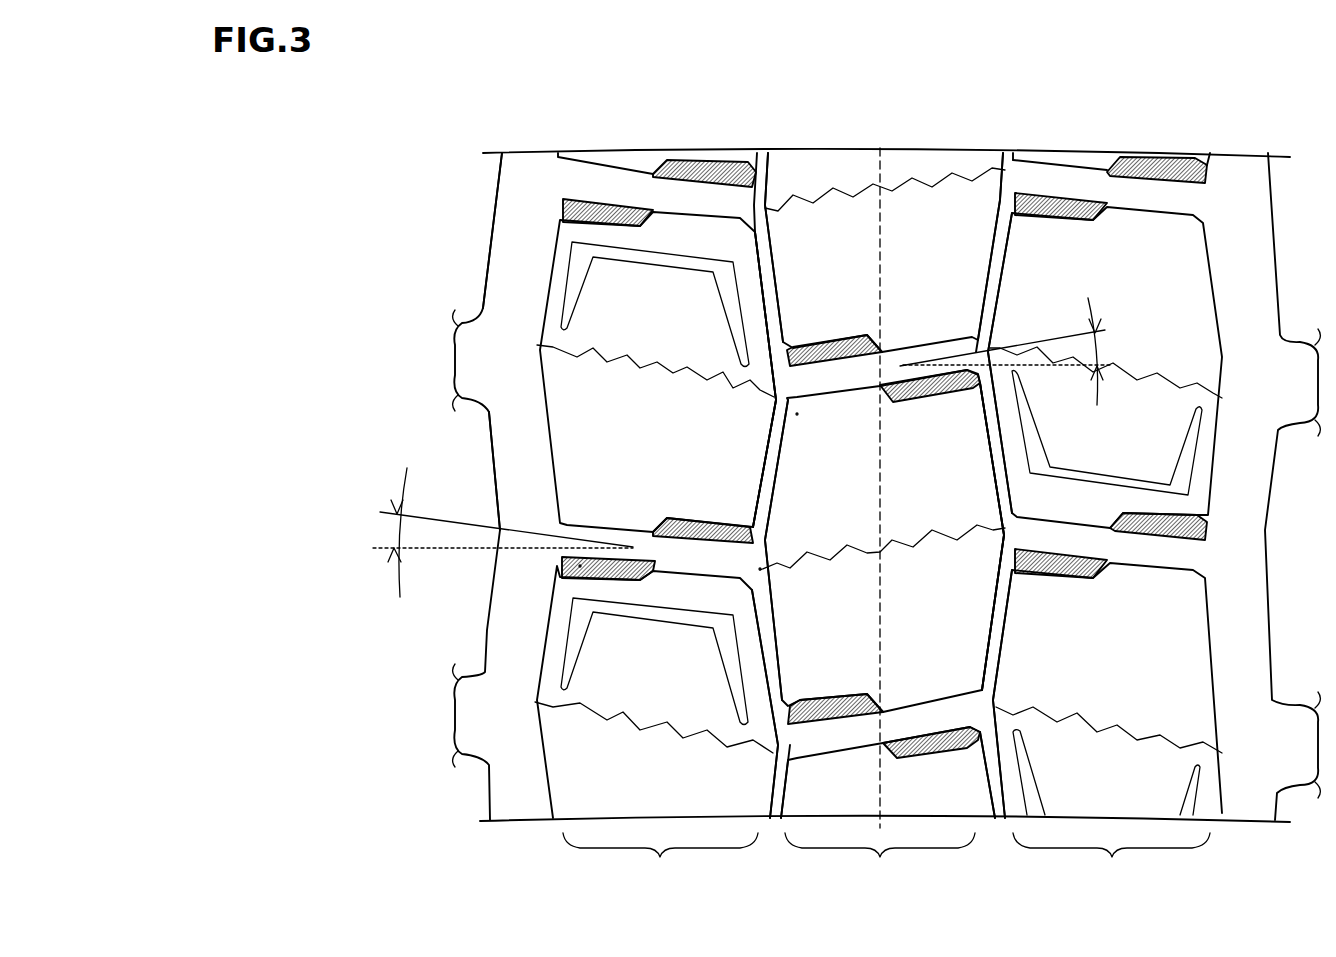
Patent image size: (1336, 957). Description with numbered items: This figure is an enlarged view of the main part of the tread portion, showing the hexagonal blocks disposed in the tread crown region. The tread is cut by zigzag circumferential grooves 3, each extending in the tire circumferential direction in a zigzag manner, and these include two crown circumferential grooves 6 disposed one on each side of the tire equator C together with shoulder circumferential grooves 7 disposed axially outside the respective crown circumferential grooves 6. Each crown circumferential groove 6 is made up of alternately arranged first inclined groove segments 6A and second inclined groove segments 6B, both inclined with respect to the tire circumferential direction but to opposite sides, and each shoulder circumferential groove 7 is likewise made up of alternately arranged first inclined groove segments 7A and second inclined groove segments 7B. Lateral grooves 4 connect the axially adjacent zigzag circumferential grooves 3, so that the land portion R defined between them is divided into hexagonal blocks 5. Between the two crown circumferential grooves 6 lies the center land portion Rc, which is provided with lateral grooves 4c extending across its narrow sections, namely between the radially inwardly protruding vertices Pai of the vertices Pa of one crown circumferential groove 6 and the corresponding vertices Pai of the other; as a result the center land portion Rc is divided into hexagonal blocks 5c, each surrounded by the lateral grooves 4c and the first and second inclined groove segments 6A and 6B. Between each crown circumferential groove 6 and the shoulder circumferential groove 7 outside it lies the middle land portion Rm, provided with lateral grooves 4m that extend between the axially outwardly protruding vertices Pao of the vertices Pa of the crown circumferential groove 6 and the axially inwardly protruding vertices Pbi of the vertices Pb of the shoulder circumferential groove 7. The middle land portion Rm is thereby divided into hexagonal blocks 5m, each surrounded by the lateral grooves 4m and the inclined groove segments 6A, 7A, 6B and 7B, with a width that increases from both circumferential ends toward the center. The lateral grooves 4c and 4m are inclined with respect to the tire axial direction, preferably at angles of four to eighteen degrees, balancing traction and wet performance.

The zigzag circumferential groove 3 is at (824, 445).
The crown circumferential groove 6 is at (762, 162).
The shoulder circumferential groove 7 is at (534, 163).
The first inclined groove segment 6A is at (1000, 490).
The second inclined groove segment 6B is at (765, 460).
The first inclined groove segment 7A is at (513, 455).
The second inclined groove segment 7B is at (517, 253).
The lateral groove 4 is at (884, 426).
The lateral groove 4m is at (630, 187).
The lateral groove 4c is at (913, 357).
The hexagonal block 5 is at (878, 485).
The hexagonal block 5m is at (676, 435).
The hexagonal block 5c is at (881, 265).
The vertex Pa is at (875, 509).
The radially inwardly protruding vertex Pai is at (795, 412).
The axially outwardly protruding vertex Pao is at (760, 568).
The vertex Pb is at (633, 617).
The axially inwardly protruding vertex Pbi is at (580, 565).
The land portion R is at (886, 865).
The middle land portion Rm is at (886, 865).
The center land portion Rc is at (880, 865).
The tire equator C is at (881, 500).